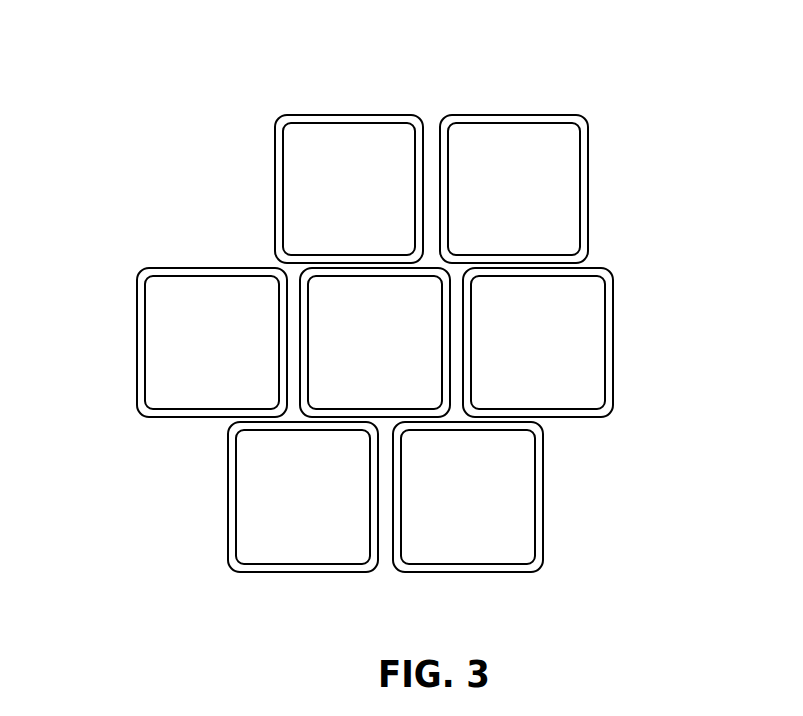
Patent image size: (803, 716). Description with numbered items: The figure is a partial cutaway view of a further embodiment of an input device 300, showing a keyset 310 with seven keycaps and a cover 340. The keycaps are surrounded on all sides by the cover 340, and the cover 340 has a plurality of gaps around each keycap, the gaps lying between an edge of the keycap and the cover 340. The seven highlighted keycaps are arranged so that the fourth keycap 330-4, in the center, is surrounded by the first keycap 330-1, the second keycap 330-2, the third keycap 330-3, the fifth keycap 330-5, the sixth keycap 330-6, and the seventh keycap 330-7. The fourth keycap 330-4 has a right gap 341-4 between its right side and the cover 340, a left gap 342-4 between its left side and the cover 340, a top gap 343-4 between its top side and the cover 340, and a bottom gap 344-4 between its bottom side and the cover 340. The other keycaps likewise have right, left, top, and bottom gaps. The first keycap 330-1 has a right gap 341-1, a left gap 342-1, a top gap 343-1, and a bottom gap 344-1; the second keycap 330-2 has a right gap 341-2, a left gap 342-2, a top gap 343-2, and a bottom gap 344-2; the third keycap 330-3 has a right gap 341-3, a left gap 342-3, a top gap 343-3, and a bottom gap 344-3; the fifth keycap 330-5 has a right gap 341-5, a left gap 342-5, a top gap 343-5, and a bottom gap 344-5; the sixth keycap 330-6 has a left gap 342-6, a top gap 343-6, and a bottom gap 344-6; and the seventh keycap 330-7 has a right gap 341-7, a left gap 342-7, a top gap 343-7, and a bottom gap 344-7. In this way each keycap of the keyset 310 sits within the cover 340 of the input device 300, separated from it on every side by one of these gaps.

The input device 300 is at (112, 97).
The keyset 310 is at (733, 92).
The cover 340 is at (698, 560).
The first keycap 330-1 is at (342, 115).
The second keycap 330-2 is at (507, 123).
The third keycap 330-3 is at (140, 412).
The fourth keycap 330-4 is at (388, 400).
The fifth keycap 330-5 is at (613, 395).
The sixth keycap 330-6 is at (333, 540).
The seventh keycap 330-7 is at (491, 540).
The right gap 341-1 is at (430, 143).
The right gap 341-2 is at (588, 182).
The right gap 341-3 is at (283, 300).
The right gap 341-4 is at (440, 340).
The right gap 341-5 is at (613, 340).
The right gap 341-7 is at (543, 520).
The left gap 342-1 is at (275, 192).
The left gap 342-2 is at (439, 132).
The left gap 342-3 is at (137, 332).
The left gap 342-4 is at (308, 330).
The left gap 342-5 is at (471, 378).
The left gap 342-6 is at (228, 485).
The left gap 342-7 is at (393, 537).
The top gap 343-1 is at (325, 97).
The top gap 343-2 is at (532, 115).
The top gap 343-3 is at (155, 268).
The top gap 343-4 is at (368, 276).
The top gap 343-5 is at (547, 276).
The top gap 343-6 is at (283, 430).
The top gap 343-7 is at (442, 430).
The bottom gap 344-1 is at (281, 263).
The bottom gap 344-2 is at (587, 263).
The bottom gap 344-3 is at (150, 417).
The bottom gap 344-4 is at (418, 409).
The bottom gap 344-5 is at (583, 417).
The bottom gap 344-6 is at (257, 572).
The bottom gap 344-7 is at (467, 572).